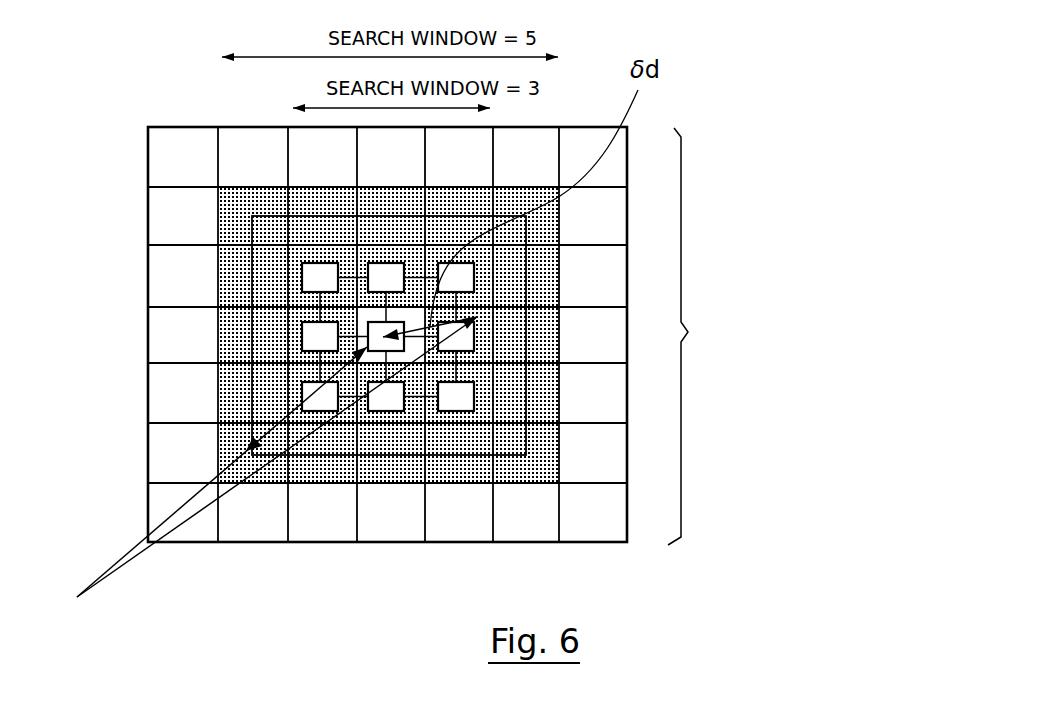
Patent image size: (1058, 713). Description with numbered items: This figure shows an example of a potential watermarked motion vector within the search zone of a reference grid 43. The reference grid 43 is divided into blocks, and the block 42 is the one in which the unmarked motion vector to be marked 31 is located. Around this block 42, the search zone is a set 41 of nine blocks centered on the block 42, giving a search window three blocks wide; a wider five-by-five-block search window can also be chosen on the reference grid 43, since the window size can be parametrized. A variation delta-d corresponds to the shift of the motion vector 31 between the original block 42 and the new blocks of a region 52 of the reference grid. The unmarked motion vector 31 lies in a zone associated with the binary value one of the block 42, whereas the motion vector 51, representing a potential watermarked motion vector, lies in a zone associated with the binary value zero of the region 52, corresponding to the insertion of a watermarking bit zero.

The motion vector to be marked 31 is at (137, 543).
The set of nine blocks 41 is at (488, 396).
The block 42 is at (352, 310).
The reference grid 43 is at (560, 226).
The potential watermarked motion vector 51 is at (227, 487).
The region of the reference grid 52 is at (490, 338).